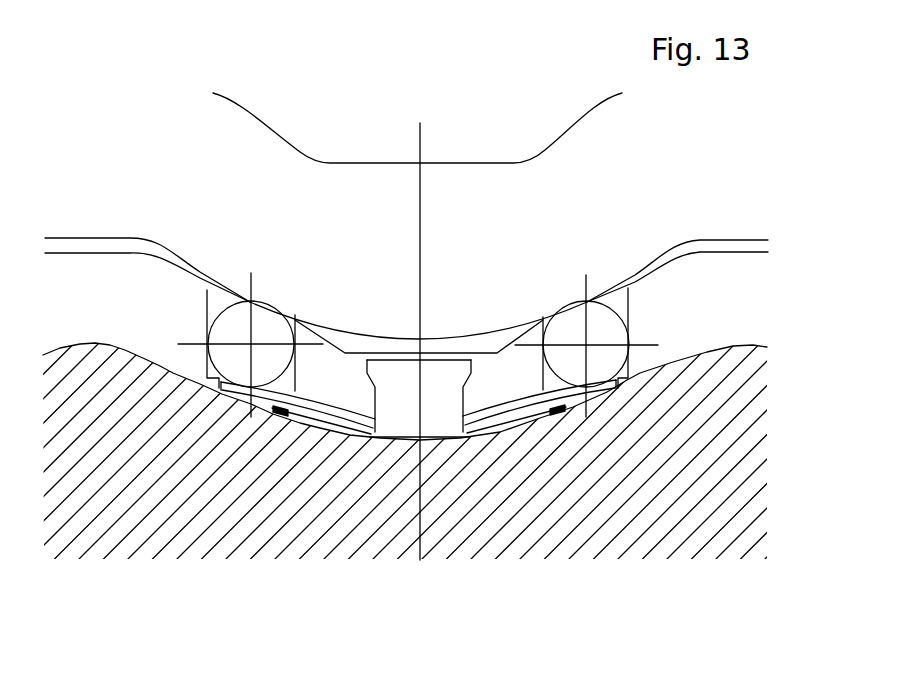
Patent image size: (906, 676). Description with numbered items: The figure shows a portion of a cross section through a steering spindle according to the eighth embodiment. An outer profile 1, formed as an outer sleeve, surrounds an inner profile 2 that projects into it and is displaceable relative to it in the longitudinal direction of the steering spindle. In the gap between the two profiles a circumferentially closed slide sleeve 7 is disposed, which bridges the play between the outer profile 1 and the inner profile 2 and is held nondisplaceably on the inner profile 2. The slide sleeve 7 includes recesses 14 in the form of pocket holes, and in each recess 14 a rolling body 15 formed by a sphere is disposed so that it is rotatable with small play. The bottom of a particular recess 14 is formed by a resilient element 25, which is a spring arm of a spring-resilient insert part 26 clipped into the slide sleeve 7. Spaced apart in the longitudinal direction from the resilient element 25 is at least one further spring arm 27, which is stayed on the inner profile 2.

The outer profile 1 is at (317, 200).
The inner profile 2 is at (675, 490).
The slide sleeve 7 is at (667, 300).
The recess 14 is at (218, 300).
The rolling body 15 is at (263, 323).
The resilient element 25 is at (238, 392).
The spring-resilient insert part 26 is at (405, 443).
The further spring arm 27 is at (295, 418).